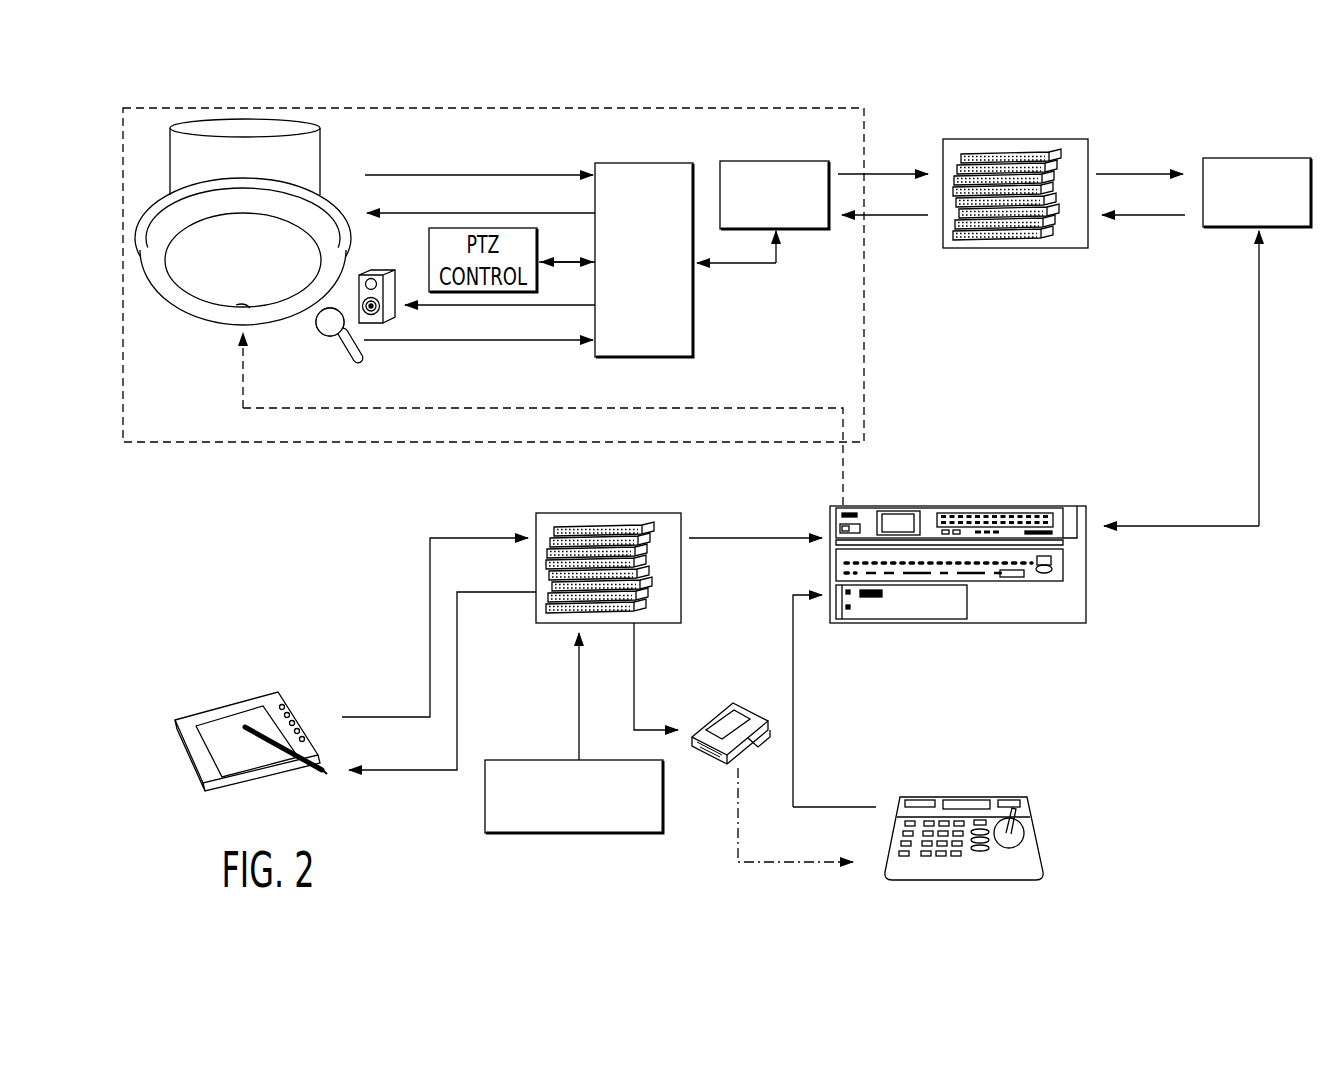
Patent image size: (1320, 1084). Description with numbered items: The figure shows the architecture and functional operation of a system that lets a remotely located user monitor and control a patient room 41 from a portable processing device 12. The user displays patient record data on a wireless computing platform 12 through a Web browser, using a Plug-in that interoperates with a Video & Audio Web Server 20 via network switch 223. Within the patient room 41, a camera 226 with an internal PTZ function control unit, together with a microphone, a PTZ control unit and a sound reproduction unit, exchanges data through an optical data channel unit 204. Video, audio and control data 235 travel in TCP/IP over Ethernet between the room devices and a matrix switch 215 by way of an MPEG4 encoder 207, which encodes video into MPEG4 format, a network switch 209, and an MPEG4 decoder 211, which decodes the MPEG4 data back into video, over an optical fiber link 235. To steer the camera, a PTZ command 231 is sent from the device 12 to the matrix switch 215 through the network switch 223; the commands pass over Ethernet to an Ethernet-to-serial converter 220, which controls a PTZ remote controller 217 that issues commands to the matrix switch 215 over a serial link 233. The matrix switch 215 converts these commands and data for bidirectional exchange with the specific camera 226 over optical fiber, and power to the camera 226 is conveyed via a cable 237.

The portable processing device 12 is at (181, 750).
The Video & Audio Web Server 20 is at (487, 807).
The patient room 41 is at (136, 366).
The optical data channel unit 204 is at (636, 175).
The MPEG4 encoder 207 is at (773, 159).
The network switch 209 is at (1007, 250).
The MPEG4 decoder 211 is at (1218, 229).
The matrix switch 215 is at (1080, 604).
The PTZ remote controller 217 is at (1026, 846).
The Ethernet-to-serial converter 220 is at (720, 704).
The network switch 223 is at (668, 605).
The camera 226 is at (318, 158).
The PTZ command 231 is at (430, 643).
The RS-422 link 233 is at (795, 760).
The video, audio and control data 235 is at (1259, 420).
The cable 237 is at (299, 410).